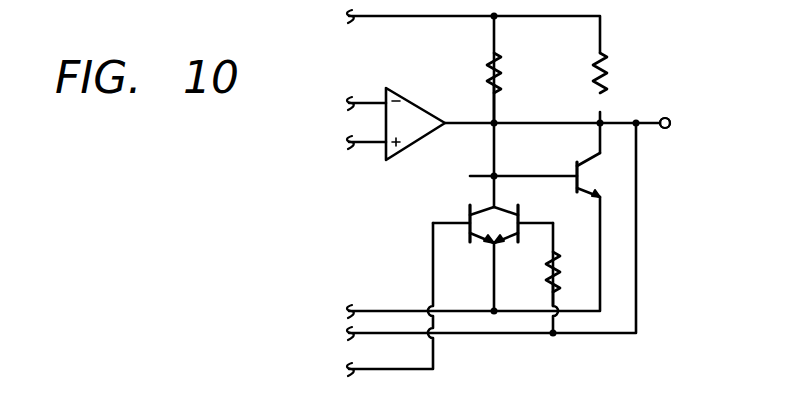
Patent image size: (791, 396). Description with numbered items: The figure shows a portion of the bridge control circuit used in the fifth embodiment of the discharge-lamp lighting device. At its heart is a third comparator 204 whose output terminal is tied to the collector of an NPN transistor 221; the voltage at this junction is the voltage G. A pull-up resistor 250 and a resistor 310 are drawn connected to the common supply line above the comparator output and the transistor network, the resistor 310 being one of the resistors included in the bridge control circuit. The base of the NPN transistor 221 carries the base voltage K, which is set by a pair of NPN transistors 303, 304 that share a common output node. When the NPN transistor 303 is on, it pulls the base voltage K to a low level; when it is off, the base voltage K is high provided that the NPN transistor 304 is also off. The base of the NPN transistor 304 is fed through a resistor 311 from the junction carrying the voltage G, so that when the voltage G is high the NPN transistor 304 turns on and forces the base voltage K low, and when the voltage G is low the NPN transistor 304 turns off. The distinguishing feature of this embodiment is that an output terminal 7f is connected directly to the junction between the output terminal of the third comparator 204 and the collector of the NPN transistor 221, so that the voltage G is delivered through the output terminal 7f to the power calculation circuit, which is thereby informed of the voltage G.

The third comparator 204 is at (425, 103).
The resistor 310 is at (507, 70).
The resistor 250 is at (617, 70).
The NPN transistor 221 is at (578, 149).
The NPN transistor 303 is at (462, 240).
The NPN transistor 304 is at (512, 242).
The resistor 311 is at (572, 266).
The voltage G is at (605, 120).
The base voltage K is at (484, 177).
The output terminal 7f is at (682, 124).